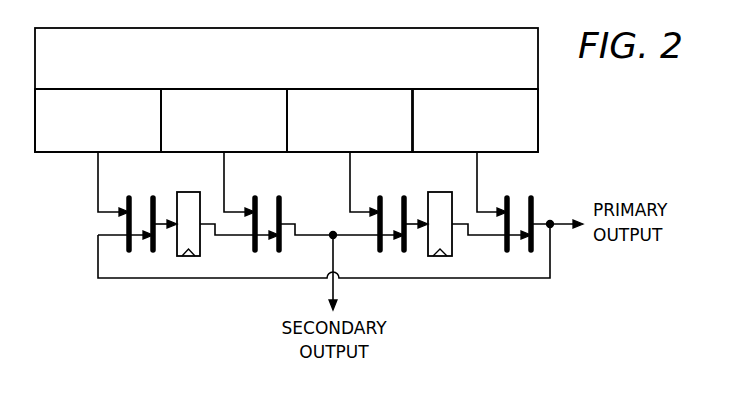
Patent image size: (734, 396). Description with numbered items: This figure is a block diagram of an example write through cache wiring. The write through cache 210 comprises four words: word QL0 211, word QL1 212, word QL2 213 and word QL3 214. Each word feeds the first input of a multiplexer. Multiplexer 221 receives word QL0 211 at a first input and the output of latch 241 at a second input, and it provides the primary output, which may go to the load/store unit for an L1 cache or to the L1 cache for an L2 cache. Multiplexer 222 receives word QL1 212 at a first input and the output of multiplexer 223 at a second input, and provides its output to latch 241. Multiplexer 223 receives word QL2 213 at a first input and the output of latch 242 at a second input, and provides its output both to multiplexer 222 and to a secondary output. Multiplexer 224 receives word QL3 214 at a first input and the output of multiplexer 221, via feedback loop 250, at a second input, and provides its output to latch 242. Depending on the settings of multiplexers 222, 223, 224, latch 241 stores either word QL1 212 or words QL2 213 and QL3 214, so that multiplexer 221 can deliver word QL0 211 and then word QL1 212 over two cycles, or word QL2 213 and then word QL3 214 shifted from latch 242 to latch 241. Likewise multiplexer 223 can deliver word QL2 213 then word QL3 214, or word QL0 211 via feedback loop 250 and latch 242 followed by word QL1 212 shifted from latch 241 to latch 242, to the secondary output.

The write through cache 210 is at (538, 82).
The word QL0 211 is at (458, 153).
The word QL1 212 is at (336, 153).
The word QL2 213 is at (210, 153).
The word QL3 214 is at (86, 153).
The multiplexer 221 is at (510, 190).
The multiplexer 222 is at (385, 190).
The multiplexer 223 is at (258, 190).
The multiplexer 224 is at (133, 190).
The latch 241 is at (455, 246).
The latch 242 is at (203, 246).
The feedback loop 250 is at (98, 253).